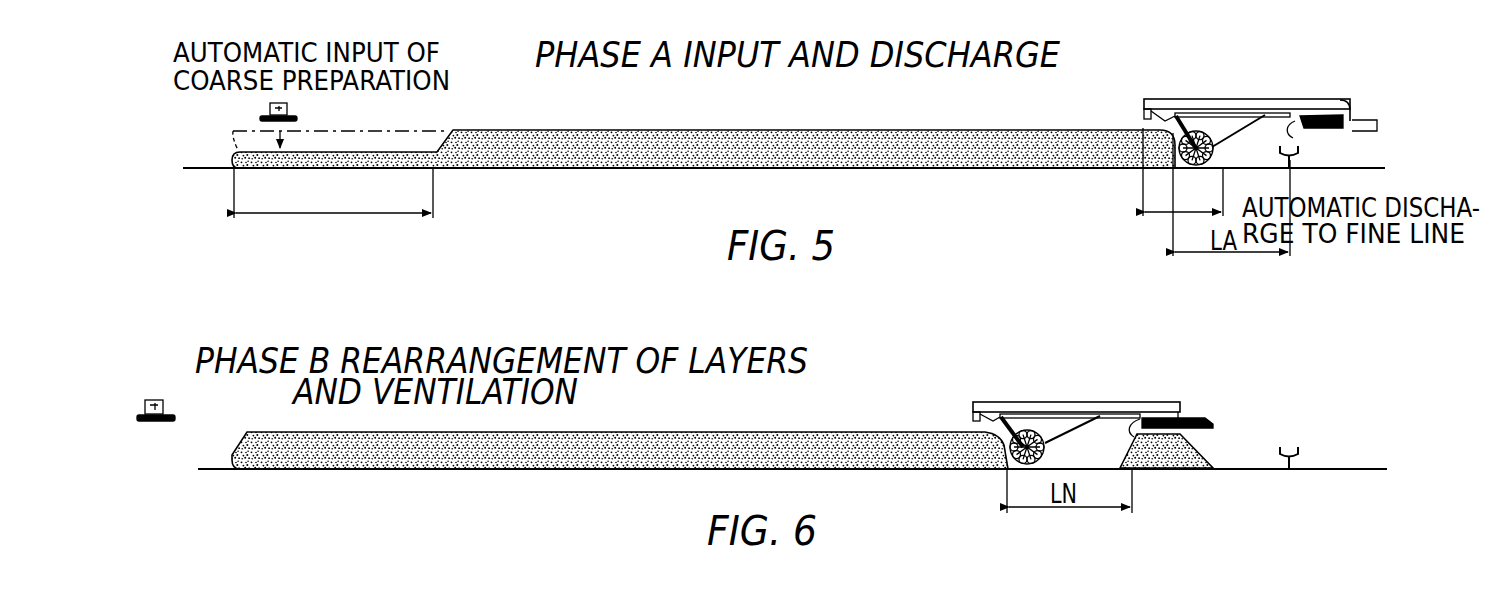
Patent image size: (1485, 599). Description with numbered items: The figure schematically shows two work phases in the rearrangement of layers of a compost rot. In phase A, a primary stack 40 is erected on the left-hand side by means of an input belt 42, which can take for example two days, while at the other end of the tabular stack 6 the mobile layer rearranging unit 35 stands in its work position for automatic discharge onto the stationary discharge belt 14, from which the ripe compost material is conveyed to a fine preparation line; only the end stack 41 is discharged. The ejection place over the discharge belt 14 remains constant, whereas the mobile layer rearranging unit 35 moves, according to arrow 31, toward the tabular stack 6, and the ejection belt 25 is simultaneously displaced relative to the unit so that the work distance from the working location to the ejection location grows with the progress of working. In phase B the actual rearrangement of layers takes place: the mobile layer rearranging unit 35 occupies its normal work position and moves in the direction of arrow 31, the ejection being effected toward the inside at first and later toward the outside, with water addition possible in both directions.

In FIG. 5, the tabular stack 6 is at (772, 143).
In FIG. 6, the tabular stack 6 is at (743, 443).
In FIG. 5, the stationary discharge belt 14 is at (1302, 152).
In FIG. 6, the stationary discharge belt 14 is at (1302, 450).
In FIG. 5, the ejection belt 25 is at (1338, 100).
In FIG. 5, the arrow 31 is at (1203, 92).
In FIG. 6, the arrow 31 is at (1037, 393).
In FIG. 5, the mobile layer rearranging unit 35 is at (1280, 99).
In FIG. 6, the mobile layer rearranging unit 35 is at (1122, 401).
In FIG. 5, the primary stack 40 is at (332, 215).
In FIG. 5, the end stack 41 is at (1165, 215).
In FIG. 5, the input belt 42 is at (288, 109).
In FIG. 6, the input belt 42 is at (150, 407).